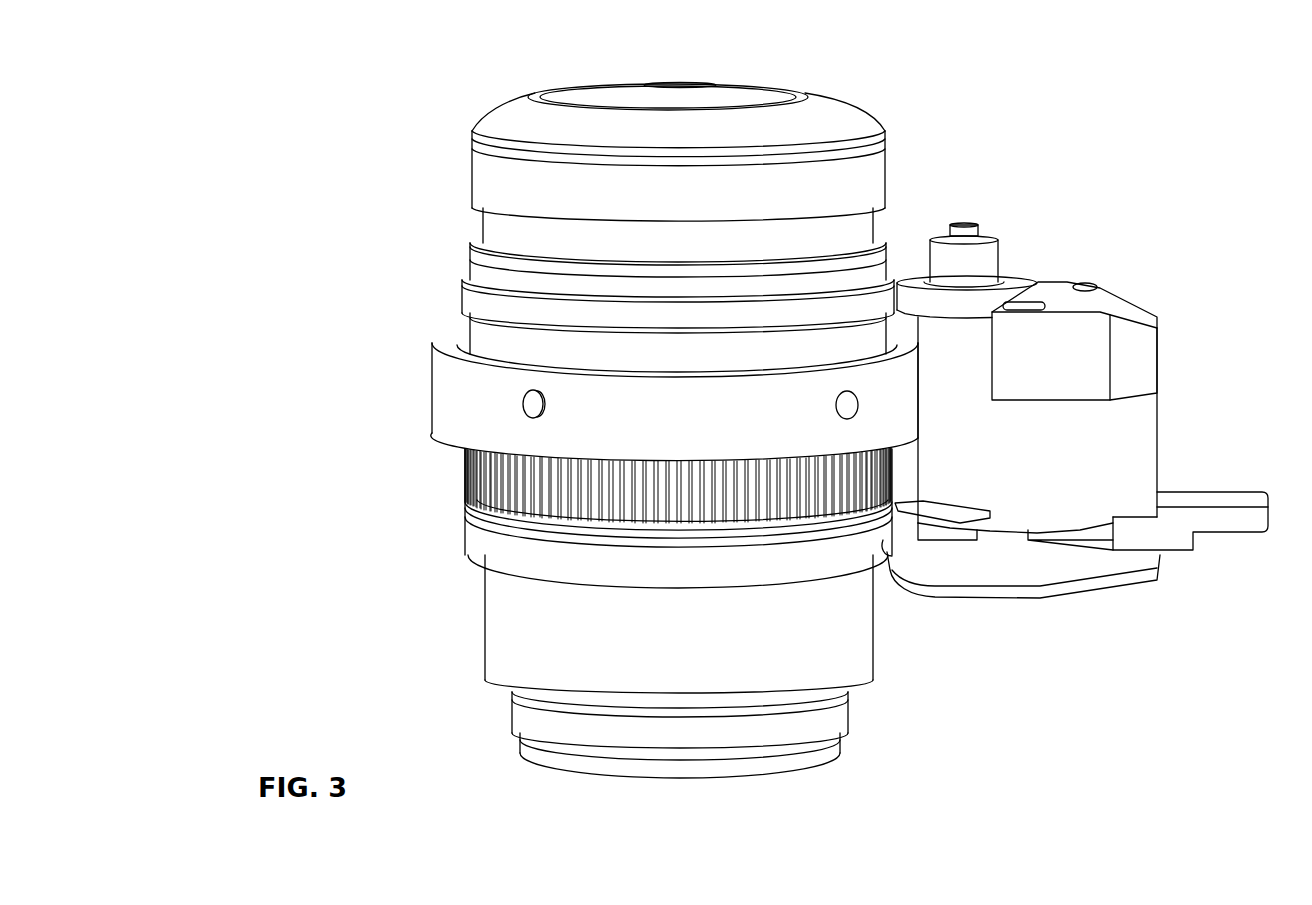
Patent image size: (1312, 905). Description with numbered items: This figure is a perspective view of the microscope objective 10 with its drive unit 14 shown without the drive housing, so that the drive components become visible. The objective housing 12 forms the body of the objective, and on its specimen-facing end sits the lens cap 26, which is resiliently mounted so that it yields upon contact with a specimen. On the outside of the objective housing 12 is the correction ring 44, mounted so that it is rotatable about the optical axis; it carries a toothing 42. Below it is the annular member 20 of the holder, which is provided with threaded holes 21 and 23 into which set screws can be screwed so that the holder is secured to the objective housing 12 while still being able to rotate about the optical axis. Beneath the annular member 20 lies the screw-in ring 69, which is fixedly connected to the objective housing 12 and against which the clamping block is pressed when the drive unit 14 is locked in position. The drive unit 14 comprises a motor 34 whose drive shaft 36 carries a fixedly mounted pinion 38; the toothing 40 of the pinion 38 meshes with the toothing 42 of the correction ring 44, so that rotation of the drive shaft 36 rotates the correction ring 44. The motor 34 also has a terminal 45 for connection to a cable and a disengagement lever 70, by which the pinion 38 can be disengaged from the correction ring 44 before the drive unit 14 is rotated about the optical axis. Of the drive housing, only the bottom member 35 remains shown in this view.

The microscope objective 10 is at (1040, 103).
The objective housing 12 is at (482, 600).
The drive unit 14 is at (1135, 213).
The annular member 20 is at (428, 368).
The threaded hole 21 is at (524, 404).
The threaded hole 23 is at (837, 406).
The lens cap 26 is at (818, 95).
The motor 34 is at (1093, 492).
The bottom member 35 is at (1034, 592).
The drive shaft 36 is at (967, 218).
The pinion 38 is at (916, 280).
The toothing 40 is at (997, 303).
The toothing 42 is at (462, 300).
The correction ring 44 is at (468, 270).
The terminal 45 is at (925, 500).
The screw-in ring 69 is at (463, 460).
The disengagement lever 70 is at (1233, 518).